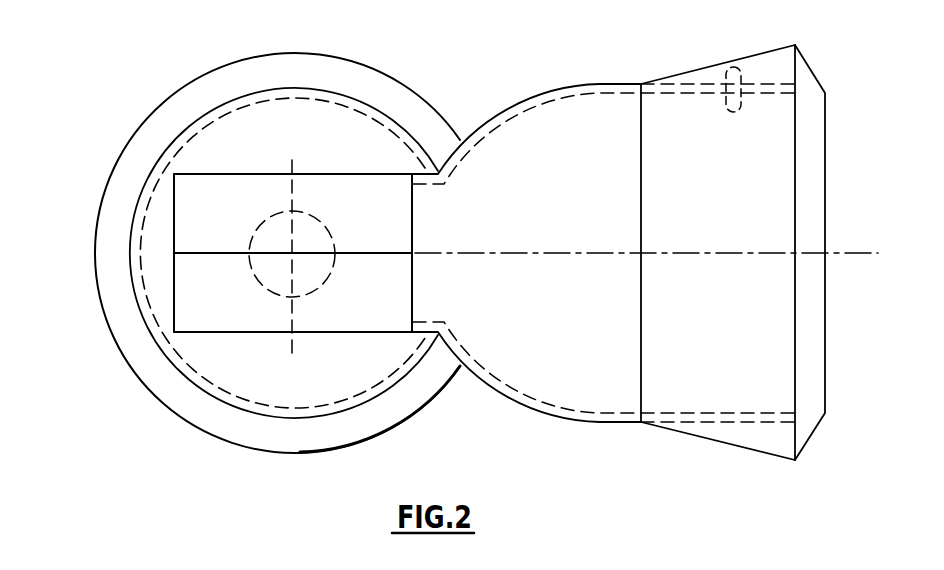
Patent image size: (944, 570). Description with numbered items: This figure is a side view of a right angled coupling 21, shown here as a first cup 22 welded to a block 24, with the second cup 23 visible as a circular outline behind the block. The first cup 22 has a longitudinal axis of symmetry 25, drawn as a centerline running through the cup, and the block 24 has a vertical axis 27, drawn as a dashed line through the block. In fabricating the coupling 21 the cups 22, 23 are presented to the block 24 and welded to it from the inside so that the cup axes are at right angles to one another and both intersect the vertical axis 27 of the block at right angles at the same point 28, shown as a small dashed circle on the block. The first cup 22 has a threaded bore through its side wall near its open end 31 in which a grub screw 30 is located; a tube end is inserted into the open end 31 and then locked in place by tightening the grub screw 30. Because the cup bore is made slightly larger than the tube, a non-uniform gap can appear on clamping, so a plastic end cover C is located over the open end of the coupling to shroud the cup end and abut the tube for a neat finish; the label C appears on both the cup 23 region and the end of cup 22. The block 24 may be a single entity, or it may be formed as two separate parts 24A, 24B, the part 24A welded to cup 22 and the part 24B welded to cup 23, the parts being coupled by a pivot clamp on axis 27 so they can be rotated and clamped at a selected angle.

The right angled coupling 21 is at (531, 88).
The first cup 22 is at (594, 366).
The second cup 23 is at (345, 388).
The block 24 is at (182, 296).
The first block part 24A is at (182, 194).
The second block part 24B is at (182, 264).
The longitudinal axis of symmetry 25 is at (663, 253).
The vertical axis 27 is at (292, 162).
The intersection point 28 is at (288, 254).
The grub screw 30 is at (727, 68).
The open end 31 is at (825, 322).
The plastic end cover C is at (192, 92).